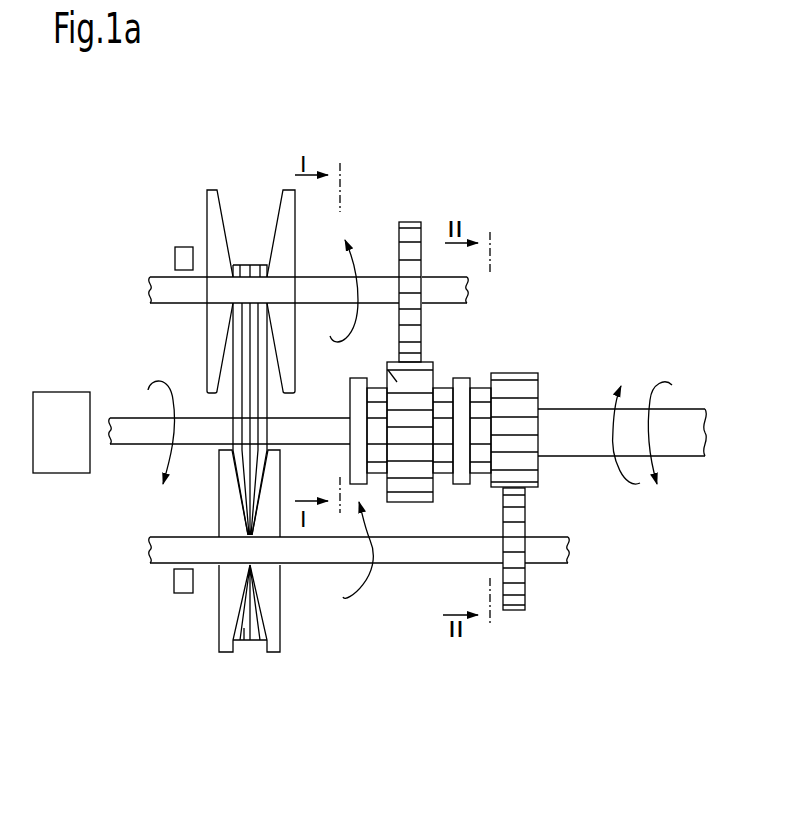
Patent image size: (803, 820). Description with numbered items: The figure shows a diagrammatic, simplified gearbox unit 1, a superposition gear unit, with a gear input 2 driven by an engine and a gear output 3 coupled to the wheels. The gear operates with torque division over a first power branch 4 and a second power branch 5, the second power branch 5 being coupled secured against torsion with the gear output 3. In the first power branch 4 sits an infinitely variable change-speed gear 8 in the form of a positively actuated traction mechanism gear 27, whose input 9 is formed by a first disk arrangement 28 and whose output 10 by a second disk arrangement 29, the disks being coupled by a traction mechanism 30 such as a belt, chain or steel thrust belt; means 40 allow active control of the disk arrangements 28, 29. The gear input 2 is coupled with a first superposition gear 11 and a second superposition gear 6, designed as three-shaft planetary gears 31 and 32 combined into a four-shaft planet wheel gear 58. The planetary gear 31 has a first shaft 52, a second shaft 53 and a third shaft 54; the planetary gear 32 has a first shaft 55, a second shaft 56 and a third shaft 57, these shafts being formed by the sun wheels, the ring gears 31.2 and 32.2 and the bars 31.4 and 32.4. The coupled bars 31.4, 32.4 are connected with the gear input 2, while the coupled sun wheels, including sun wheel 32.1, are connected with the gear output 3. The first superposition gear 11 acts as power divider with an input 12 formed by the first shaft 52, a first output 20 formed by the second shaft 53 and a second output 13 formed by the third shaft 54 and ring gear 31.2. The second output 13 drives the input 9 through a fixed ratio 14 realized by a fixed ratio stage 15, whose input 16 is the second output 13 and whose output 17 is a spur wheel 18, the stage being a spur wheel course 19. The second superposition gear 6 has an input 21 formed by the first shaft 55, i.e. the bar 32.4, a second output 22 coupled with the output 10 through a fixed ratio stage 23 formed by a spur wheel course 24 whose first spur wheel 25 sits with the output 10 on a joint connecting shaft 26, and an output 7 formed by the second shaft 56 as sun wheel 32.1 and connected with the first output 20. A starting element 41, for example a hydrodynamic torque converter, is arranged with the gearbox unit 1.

The gearbox unit 1 is at (421, 186).
The gear input 2 is at (124, 418).
The gear output 3 is at (676, 414).
The first power branch 4 is at (381, 245).
The second power branch 5 is at (526, 366).
The second superposition gear 6 is at (567, 412).
The output 7 is at (633, 480).
The infinitely variable change-speed gear 8 is at (190, 226).
The input of the infinitely variable change-speed gear 9 is at (298, 268).
The output of the infinitely variable change-speed gear 10 is at (217, 637).
The first superposition gear 11 is at (407, 510).
The input 12 is at (322, 417).
The second output 13 is at (467, 369).
The fixed ratio 14 is at (492, 160).
The fixed ratio stage 15 is at (492, 160).
The input of the fixed ratio stage 16 is at (397, 378).
The output of the fixed ratio stage 17 is at (392, 227).
The spur wheel 18 is at (404, 220).
The spur wheel course 19 is at (430, 228).
The first output 20 is at (660, 372).
The input of the second superposition gear 21 is at (478, 487).
The second output of the second superposition gear 22 is at (530, 488).
The fixed ratio stage 23 is at (602, 654).
The spur wheel course 24 is at (539, 616).
The first spur wheel 25 is at (526, 586).
The connecting shaft 26 is at (425, 553).
The traction mechanism gear 27 is at (198, 351).
The first disk arrangement 28 is at (245, 255).
The second disk arrangement 29 is at (280, 664).
The traction mechanism 30 is at (245, 641).
The first planetary gear 31 is at (410, 553).
The ring gear 31.2 is at (432, 360).
The bar 31.4 is at (383, 475).
The second planetary gear 32 is at (548, 408).
The sun wheel 32.1 is at (549, 429).
The ring gear 32.2 is at (615, 541).
The bar 32.4 is at (632, 295).
The means 40 is at (182, 257).
The starting element 41 is at (72, 443).
The first shaft 52 is at (307, 433).
The second shaft 53 is at (562, 416).
The third shaft 54 is at (541, 318).
The first shaft 55 is at (545, 371).
The second shaft 56 is at (546, 432).
The third shaft 57 is at (527, 493).
The four-shaft planet wheel gear 58 is at (593, 273).